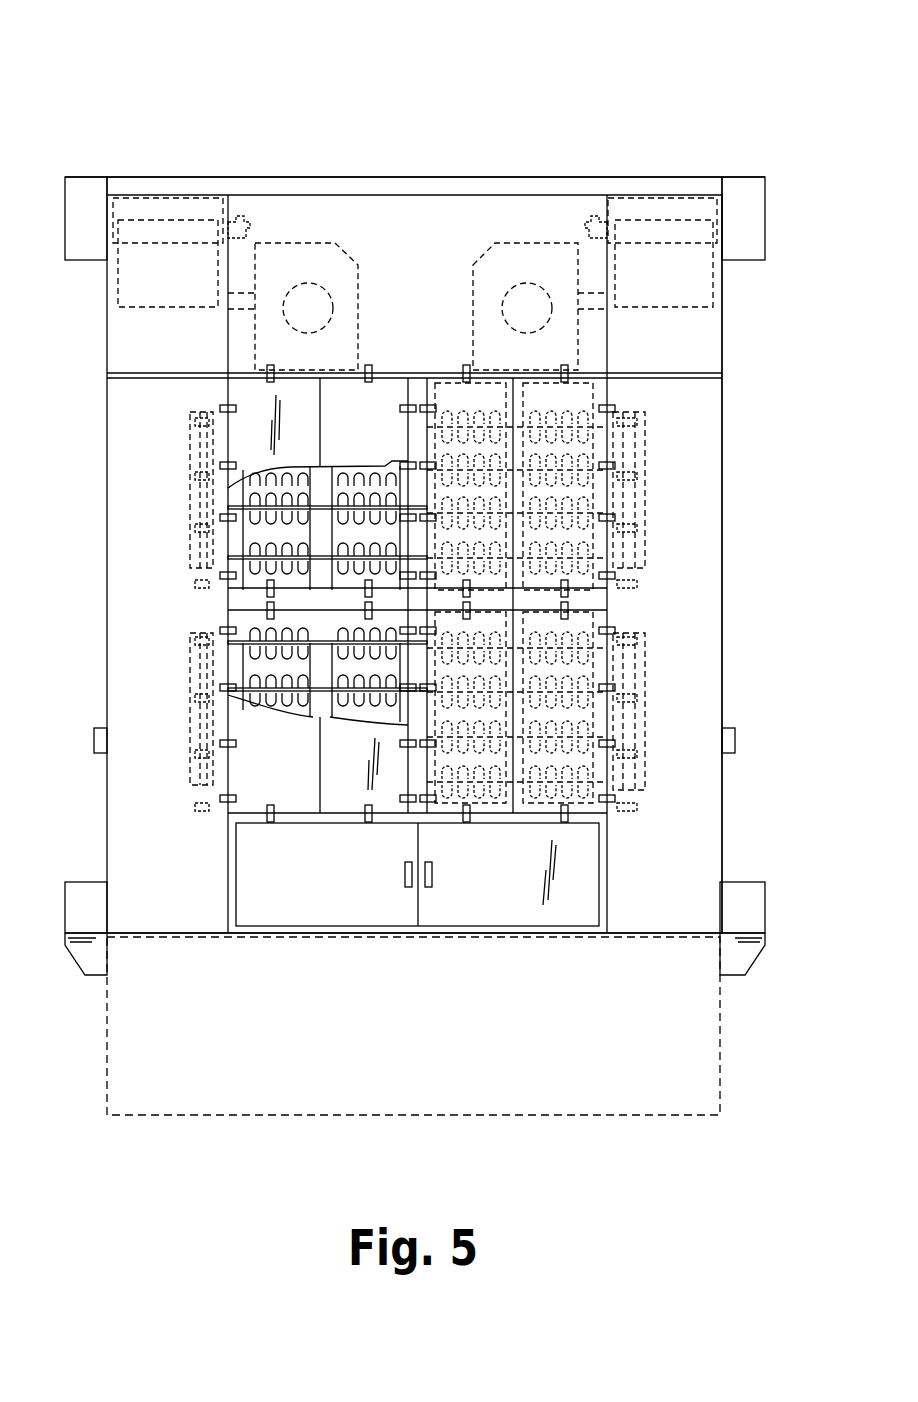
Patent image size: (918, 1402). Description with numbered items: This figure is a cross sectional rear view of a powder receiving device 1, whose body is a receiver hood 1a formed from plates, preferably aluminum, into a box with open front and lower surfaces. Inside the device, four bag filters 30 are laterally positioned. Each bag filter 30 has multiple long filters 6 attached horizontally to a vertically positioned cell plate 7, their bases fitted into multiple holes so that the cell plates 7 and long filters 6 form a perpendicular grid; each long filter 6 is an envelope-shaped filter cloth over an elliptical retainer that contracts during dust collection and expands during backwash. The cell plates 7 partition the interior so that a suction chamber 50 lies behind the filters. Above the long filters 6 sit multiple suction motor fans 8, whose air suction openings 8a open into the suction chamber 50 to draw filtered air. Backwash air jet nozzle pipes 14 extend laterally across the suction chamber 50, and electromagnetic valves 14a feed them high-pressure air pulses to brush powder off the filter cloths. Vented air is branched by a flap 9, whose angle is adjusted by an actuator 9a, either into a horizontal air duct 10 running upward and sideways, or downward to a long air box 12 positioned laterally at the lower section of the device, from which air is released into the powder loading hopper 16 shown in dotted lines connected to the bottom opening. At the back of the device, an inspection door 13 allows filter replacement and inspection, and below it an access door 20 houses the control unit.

The powder receiving device 1 is at (696, 40).
The receiver hood 1a is at (722, 460).
The long filter 6 is at (300, 500).
The cell plate 7 is at (245, 668).
The suction motor fan 8 is at (283, 243).
The air suction opening 8a is at (320, 292).
The flap 9 is at (128, 283).
The actuator 9a is at (235, 224).
The horizontal air duct 10 is at (140, 205).
The air box 12 is at (70, 918).
The inspection door 13 is at (585, 583).
The backwash air jet nozzle pipe 14 is at (247, 555).
The electromagnetic valve 14a is at (200, 462).
The powder loading hopper 16 is at (721, 1035).
The access door 20 is at (512, 908).
The bag filter 30 is at (211, 397).
The suction chamber 50 is at (257, 583).